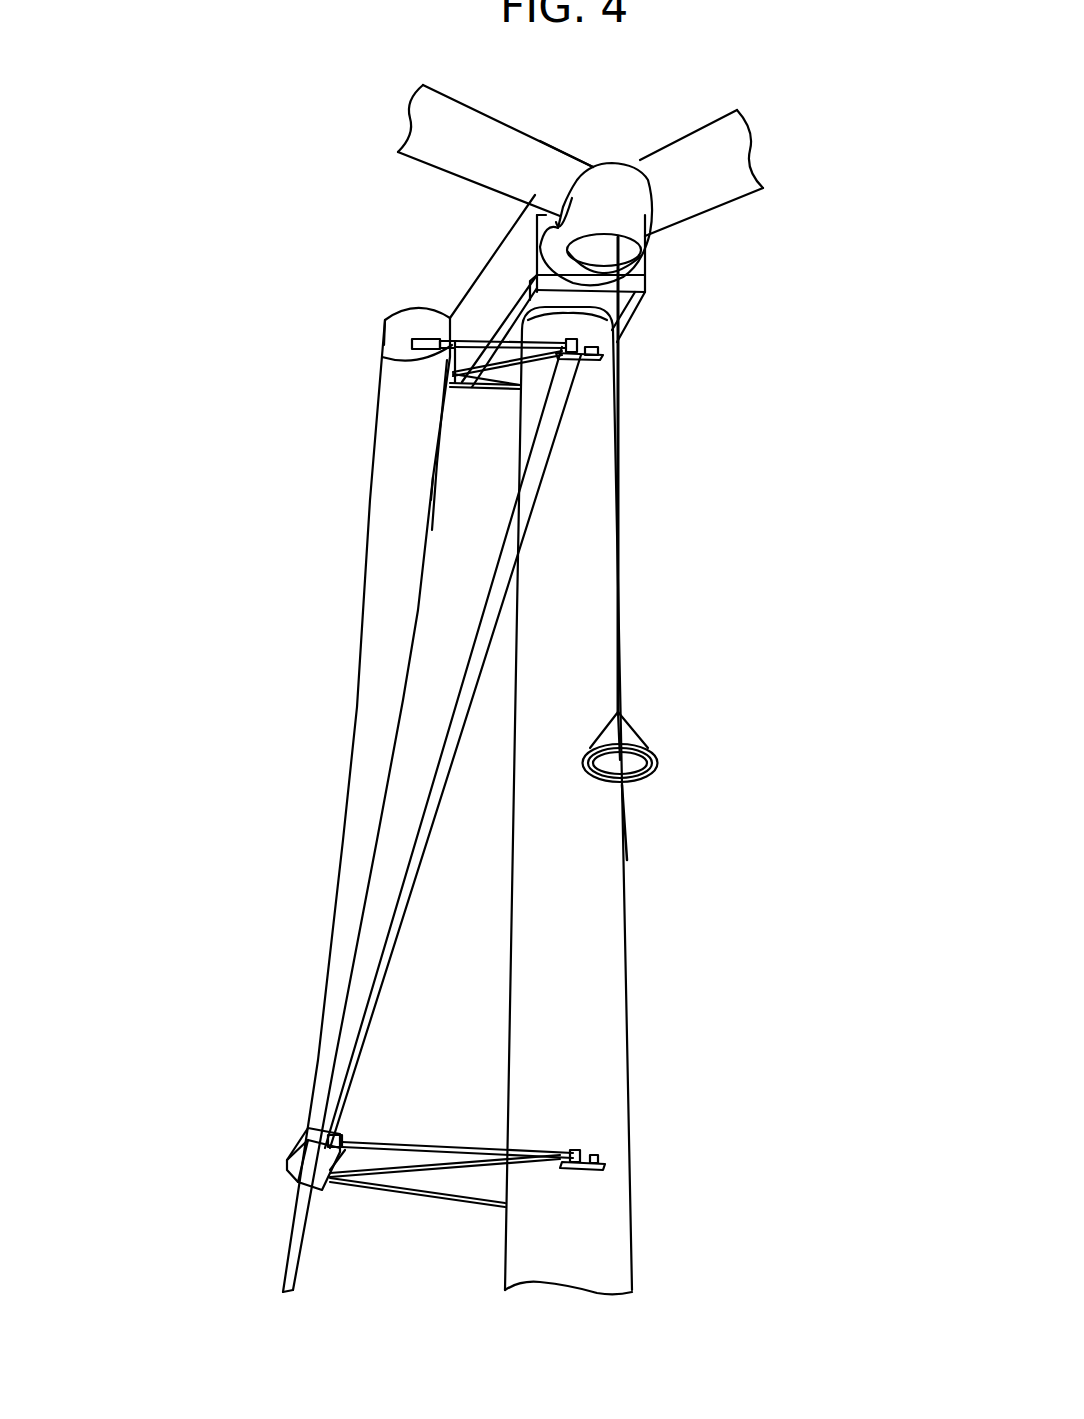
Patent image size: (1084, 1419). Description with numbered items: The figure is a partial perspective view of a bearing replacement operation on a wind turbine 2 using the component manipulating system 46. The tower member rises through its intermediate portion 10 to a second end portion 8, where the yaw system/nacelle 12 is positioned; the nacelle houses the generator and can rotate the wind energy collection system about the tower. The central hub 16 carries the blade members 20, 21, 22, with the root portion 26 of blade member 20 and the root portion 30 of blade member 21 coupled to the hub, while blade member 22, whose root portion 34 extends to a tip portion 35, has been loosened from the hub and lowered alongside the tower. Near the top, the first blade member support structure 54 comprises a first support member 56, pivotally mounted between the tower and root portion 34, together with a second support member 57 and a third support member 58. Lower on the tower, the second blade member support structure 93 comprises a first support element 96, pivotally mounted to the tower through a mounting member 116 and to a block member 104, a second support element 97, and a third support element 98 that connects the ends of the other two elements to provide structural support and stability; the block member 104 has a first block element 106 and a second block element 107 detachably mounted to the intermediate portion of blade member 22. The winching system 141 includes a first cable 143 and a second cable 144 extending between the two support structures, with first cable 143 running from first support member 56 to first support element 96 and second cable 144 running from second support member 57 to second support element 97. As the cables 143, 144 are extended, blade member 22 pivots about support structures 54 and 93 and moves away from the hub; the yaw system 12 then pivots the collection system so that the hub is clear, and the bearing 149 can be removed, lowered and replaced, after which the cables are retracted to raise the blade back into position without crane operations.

The wind turbine 2 is at (698, 1036).
The second end portion 8 is at (468, 322).
The intermediate portion 10 is at (617, 1238).
The yaw system/nacelle 12 is at (495, 233).
The central hub 16 is at (613, 175).
The blade member 20 is at (508, 88).
The blade member 21 is at (735, 232).
The blade member 22 is at (313, 657).
The root portion 26 is at (557, 157).
The root portion 30 is at (663, 217).
The root portion 34 is at (390, 330).
The tip portion 35 is at (280, 1282).
The component manipulating system 46 is at (437, 475).
The first blade member support structure 54 is at (553, 385).
The first support member 56 is at (453, 338).
The second support member 57 is at (467, 402).
The third support member 58 is at (506, 385).
The second blade member support structure 93 is at (424, 1228).
The first support element 96 is at (398, 1130).
The second support element 97 is at (468, 1222).
The third support element 98 is at (486, 1190).
The block member 104 is at (282, 1113).
The first block element 106 is at (273, 1172).
The second block element 107 is at (355, 1162).
The mounting member 116 is at (585, 1172).
The winching system 141 is at (443, 903).
The first cable 143 is at (490, 652).
The second cable 144 is at (487, 610).
The bearing 149 is at (688, 758).